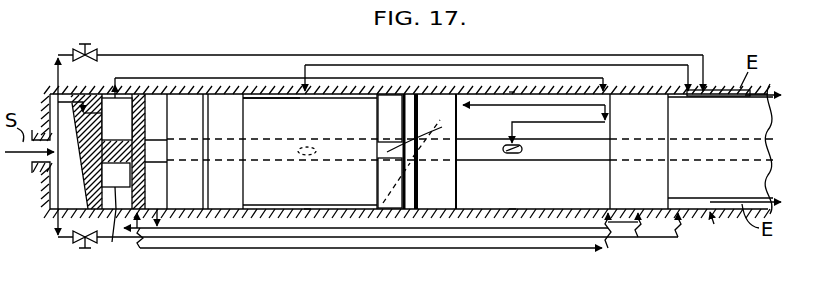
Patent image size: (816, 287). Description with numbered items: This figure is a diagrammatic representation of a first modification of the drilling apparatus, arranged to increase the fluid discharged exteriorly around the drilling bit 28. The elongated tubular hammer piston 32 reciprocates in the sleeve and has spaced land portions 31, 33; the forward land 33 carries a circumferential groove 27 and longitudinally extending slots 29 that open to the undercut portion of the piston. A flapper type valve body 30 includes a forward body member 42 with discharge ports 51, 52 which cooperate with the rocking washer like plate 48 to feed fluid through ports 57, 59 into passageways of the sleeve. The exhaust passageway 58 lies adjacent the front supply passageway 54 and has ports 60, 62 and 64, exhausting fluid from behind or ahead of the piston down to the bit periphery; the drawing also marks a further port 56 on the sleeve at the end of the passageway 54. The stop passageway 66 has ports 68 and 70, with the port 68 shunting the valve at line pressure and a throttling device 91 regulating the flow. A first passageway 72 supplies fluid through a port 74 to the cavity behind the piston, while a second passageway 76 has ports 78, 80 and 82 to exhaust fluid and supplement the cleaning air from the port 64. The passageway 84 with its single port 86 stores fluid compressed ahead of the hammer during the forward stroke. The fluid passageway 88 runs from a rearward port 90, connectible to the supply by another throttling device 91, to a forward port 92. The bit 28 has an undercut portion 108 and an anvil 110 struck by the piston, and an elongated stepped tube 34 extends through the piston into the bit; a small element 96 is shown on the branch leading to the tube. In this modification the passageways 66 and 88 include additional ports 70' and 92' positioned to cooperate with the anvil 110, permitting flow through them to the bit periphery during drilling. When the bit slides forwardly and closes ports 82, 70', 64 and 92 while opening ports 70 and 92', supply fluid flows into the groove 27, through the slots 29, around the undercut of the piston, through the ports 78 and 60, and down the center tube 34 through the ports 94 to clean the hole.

The circumferential groove 27 is at (400, 123).
The drilling bit 28 is at (770, 86).
The longitudinally extending slots 29 is at (407, 130).
The flapper type valve body 30 is at (96, 92).
The land portion 31 is at (285, 122).
The hammer piston 32 is at (263, 107).
The forward land 33 is at (462, 109).
The elongated stepped tube 34 is at (481, 152).
The forward body member 42 is at (100, 160).
The annular washer like plate 48 is at (98, 188).
The discharge port 51 is at (116, 175).
The discharge port 52 is at (117, 120).
The front supply passageway 54 is at (248, 78).
The port 56 is at (607, 90).
The port 57 is at (109, 226).
The exhaust passageway 58 is at (365, 65).
The port 59 is at (118, 92).
The port 60 is at (303, 78).
The intermediate port 62 is at (512, 91).
The forwardmost port 64 is at (687, 90).
The stop passageway 66 is at (283, 248).
The port 68 is at (55, 220).
The port 70 is at (638, 210).
The additional port 70' is at (693, 235).
The passageway 72 is at (153, 228).
The port 74 is at (158, 208).
The passageway 76 is at (563, 226).
The rearwardmost port 78 is at (307, 217).
The intermediate port 80 is at (512, 217).
The forward port 82 is at (714, 224).
The passageway 84 is at (418, 248).
The port 86 is at (606, 210).
The fluid passageway 88 is at (210, 55).
The port 90 is at (56, 88).
The throttling device 91 is at (78, 47).
The port 92 is at (718, 78).
The additional port 92' is at (716, 54).
The ports 94 is at (305, 141).
The check valve 96 is at (523, 148).
The undercut portion 108 is at (685, 170).
The anvil 110 is at (652, 117).